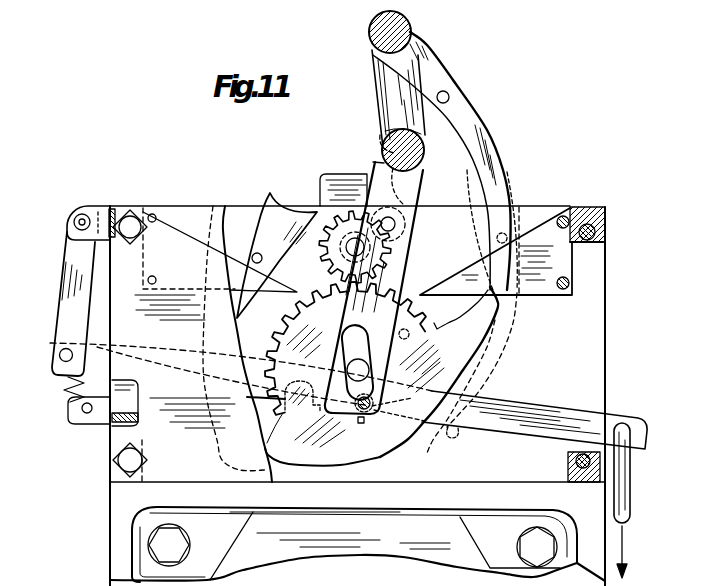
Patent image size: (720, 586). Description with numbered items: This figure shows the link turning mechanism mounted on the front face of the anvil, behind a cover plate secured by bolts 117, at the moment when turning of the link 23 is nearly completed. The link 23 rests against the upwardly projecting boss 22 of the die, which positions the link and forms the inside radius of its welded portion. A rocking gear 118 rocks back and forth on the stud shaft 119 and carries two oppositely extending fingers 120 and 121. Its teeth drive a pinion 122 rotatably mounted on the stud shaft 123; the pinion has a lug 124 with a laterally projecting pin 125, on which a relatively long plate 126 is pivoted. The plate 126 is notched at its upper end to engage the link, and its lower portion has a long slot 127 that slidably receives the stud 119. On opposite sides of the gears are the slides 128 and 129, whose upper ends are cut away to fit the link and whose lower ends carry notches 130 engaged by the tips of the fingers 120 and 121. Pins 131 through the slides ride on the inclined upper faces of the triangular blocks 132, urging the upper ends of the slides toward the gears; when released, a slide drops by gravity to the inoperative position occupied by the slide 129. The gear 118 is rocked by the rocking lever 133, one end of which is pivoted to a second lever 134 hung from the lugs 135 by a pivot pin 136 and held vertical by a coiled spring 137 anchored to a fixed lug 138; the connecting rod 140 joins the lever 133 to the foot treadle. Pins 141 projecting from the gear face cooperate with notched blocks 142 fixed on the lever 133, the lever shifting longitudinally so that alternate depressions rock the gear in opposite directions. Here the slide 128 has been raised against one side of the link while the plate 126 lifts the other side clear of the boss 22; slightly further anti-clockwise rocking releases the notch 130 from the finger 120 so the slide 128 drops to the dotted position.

The boss 22 is at (367, 192).
The link 23 is at (392, 104).
The bolts 117 is at (113, 461).
The rocking gear 118 is at (298, 336).
The stud shaft 119 is at (358, 359).
The finger 120 is at (488, 310).
The finger 121 is at (270, 457).
The pinion 122 is at (335, 258).
The stud shaft 123 is at (350, 240).
The lug 124 is at (402, 220).
The pin 125 is at (396, 228).
The plate 126 is at (403, 193).
The slot 127 is at (363, 412).
The slide 128 is at (462, 113).
The slide 129 is at (241, 367).
The notch 130 is at (430, 448).
The pin 131 is at (255, 255).
The triangular block 132 is at (565, 268).
The rocking lever 133 is at (560, 408).
The lever 134 is at (65, 283).
The lugs 135 is at (100, 213).
The pivot pin 136 is at (74, 221).
The coiled spring 137 is at (64, 390).
The fixed lug 138 is at (73, 418).
The connecting rod 140 is at (627, 483).
The pins 141 is at (410, 334).
The notched blocks 142 is at (388, 404).